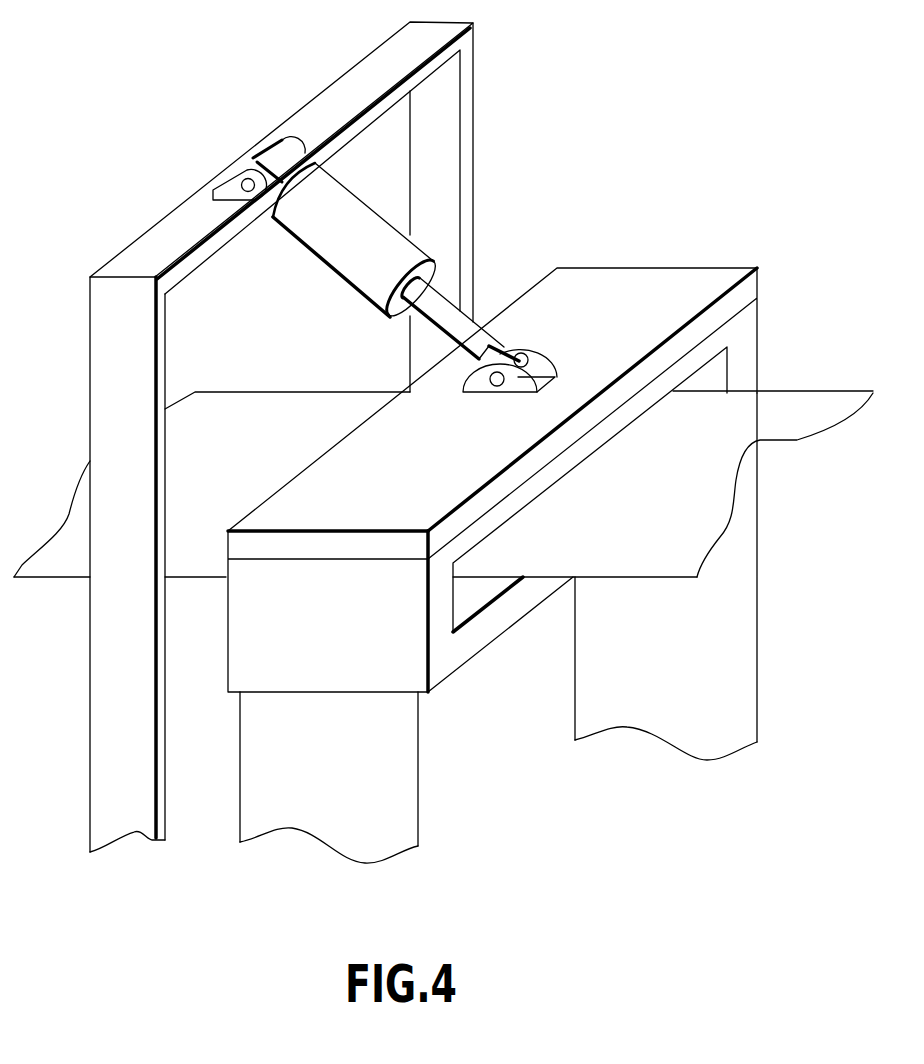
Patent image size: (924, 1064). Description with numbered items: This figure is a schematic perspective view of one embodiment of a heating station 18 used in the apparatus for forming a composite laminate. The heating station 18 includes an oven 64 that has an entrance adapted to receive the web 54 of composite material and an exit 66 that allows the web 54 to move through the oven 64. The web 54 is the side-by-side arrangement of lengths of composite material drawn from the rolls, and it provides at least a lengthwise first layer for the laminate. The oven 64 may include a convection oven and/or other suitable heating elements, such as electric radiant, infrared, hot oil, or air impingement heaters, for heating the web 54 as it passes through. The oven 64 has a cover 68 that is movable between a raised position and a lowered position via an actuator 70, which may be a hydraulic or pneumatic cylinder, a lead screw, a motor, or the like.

The heating station 18 is at (605, 157).
The web 54 is at (239, 458).
The oven 64 is at (757, 347).
The exit 66 is at (475, 595).
The cover 68 is at (626, 280).
The actuator 70 is at (350, 267).